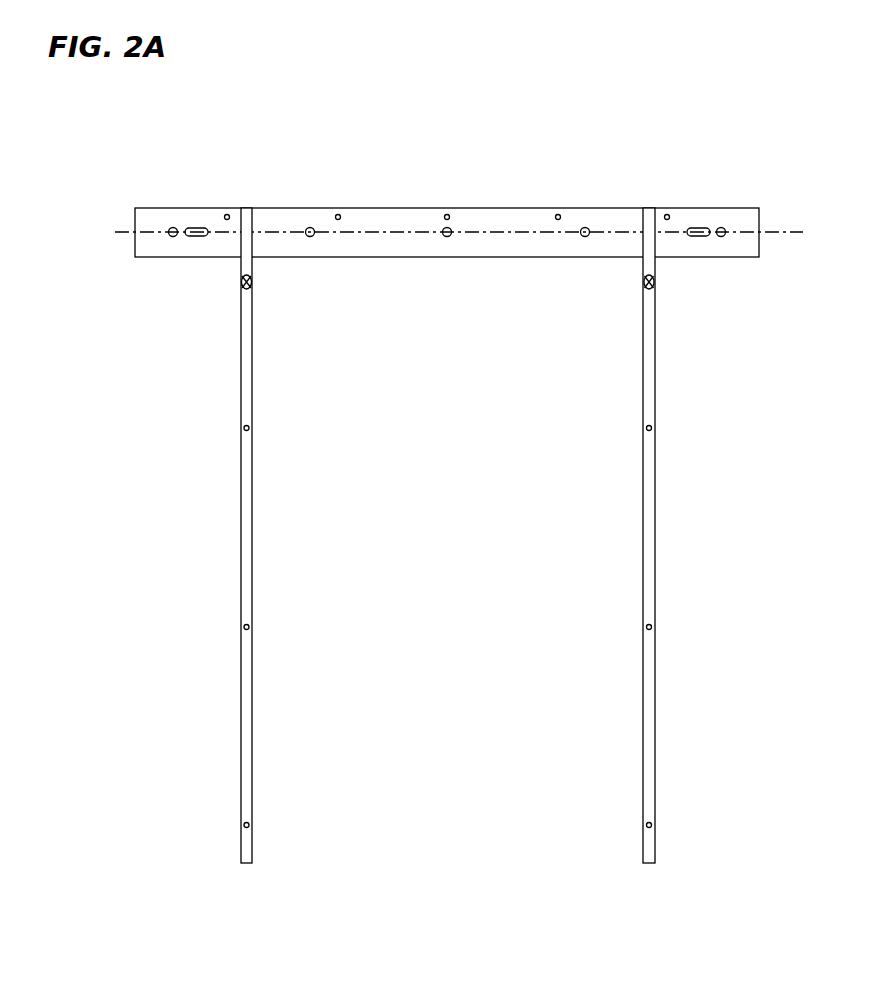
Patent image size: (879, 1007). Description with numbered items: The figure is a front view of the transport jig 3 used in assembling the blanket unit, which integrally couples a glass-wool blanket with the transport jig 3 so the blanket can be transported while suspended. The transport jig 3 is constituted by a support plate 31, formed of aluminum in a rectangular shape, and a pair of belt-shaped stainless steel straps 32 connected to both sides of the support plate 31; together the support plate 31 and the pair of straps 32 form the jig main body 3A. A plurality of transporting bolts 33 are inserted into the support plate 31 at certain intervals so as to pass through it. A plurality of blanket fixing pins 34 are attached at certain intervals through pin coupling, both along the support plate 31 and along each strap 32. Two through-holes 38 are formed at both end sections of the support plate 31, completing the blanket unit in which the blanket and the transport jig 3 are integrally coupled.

The transport jig 3 is at (501, 140).
The jig main body 3A is at (200, 418).
The support plate 31 is at (480, 258).
The strap 32 is at (253, 515).
The transporting bolt 33 is at (172, 227).
The blanket fixing pin 34 is at (227, 214).
The through-hole 38 is at (196, 238).